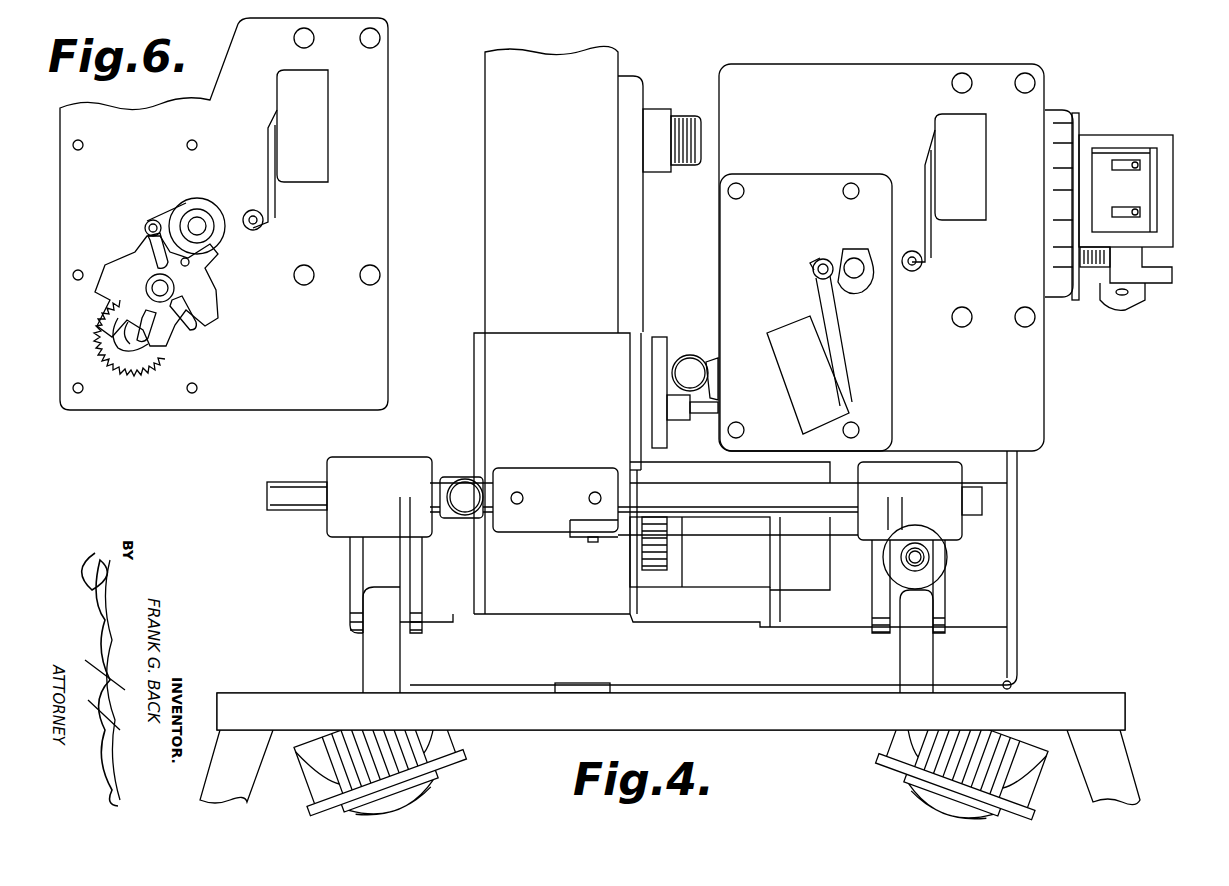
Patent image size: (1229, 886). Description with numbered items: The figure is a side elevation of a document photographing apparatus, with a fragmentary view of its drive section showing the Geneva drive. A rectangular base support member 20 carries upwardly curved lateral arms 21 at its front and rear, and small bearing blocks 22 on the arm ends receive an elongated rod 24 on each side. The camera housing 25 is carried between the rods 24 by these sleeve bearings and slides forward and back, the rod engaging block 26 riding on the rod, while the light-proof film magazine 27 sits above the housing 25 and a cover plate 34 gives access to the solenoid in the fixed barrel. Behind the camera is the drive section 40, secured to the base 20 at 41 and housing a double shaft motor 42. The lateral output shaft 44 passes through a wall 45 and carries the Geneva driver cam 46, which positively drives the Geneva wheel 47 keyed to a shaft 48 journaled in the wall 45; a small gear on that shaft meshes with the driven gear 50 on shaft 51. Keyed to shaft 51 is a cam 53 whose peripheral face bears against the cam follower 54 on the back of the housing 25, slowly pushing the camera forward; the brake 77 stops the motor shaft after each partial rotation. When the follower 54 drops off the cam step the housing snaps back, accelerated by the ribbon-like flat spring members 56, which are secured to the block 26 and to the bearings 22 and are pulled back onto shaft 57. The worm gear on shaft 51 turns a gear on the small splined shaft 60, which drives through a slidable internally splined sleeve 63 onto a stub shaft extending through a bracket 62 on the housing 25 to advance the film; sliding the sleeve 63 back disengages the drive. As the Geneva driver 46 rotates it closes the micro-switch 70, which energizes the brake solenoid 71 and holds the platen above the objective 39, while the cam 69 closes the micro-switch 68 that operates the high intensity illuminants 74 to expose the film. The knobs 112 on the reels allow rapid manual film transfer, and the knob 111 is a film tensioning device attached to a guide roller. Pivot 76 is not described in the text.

In FIG. 4, the base support member 20 is at (512, 663).
In FIG. 4, the lateral arms 21 is at (372, 660).
In FIG. 4, the bearing blocks 22 is at (338, 530).
In FIG. 4, the elongated rod 24 is at (276, 508).
In FIG. 4, the camera housing 25 is at (568, 407).
In FIG. 4, the rod engaging block 26 is at (530, 532).
In FIG. 4, the film magazine 27 is at (560, 193).
In FIG. 4, the housing wall 34 is at (474, 392).
In FIG. 4, the camera objective 39 is at (592, 688).
In FIG. 4, the drive section 40 is at (1048, 100).
In FIG. 4, the drive section mounting 41 is at (1018, 455).
In FIG. 4, the double shaft motor 42 is at (1048, 292).
In FIG. 6, the lateral output shaft 44 is at (200, 222).
In FIG. 4, the lateral output shaft 44 is at (856, 258).
In FIG. 4, the wall 45 is at (840, 118).
In FIG. 6, the Geneva driver cam 46 is at (146, 219).
In FIG. 6, the Geneva wheel 47 is at (208, 296).
In FIG. 6, the shaft 48 is at (194, 325).
In FIG. 6, the driven gear 50 is at (133, 372).
In FIG. 6, the shaft 51 is at (160, 345).
In FIG. 4, the cam 53 is at (720, 373).
In FIG. 4, the cam follower 54 is at (690, 356).
In FIG. 4, the flat spring members 56 is at (716, 538).
In FIG. 4, the shaft 57 is at (922, 557).
In FIG. 4, the small shaft 60 is at (706, 415).
In FIG. 4, the bracket 62 is at (655, 371).
In FIG. 4, the internally splined sleeve 63 is at (672, 406).
In FIG. 4, the micro-switch 68 is at (792, 402).
In FIG. 4, the cam 69 is at (852, 300).
In FIG. 6, the micro-switch 70 is at (320, 132).
In FIG. 4, the micro-switch 70 is at (986, 180).
In FIG. 4, the brake solenoid 71 is at (1140, 192).
In FIG. 4, the high intensity illuminants 74 is at (462, 756).
In FIG. 6, the pivot 76 is at (145, 229).
In FIG. 4, the brake 77 is at (1175, 142).
In FIG. 4, the knob 111 is at (652, 572).
In FIG. 4, the knobs 112 is at (684, 114).